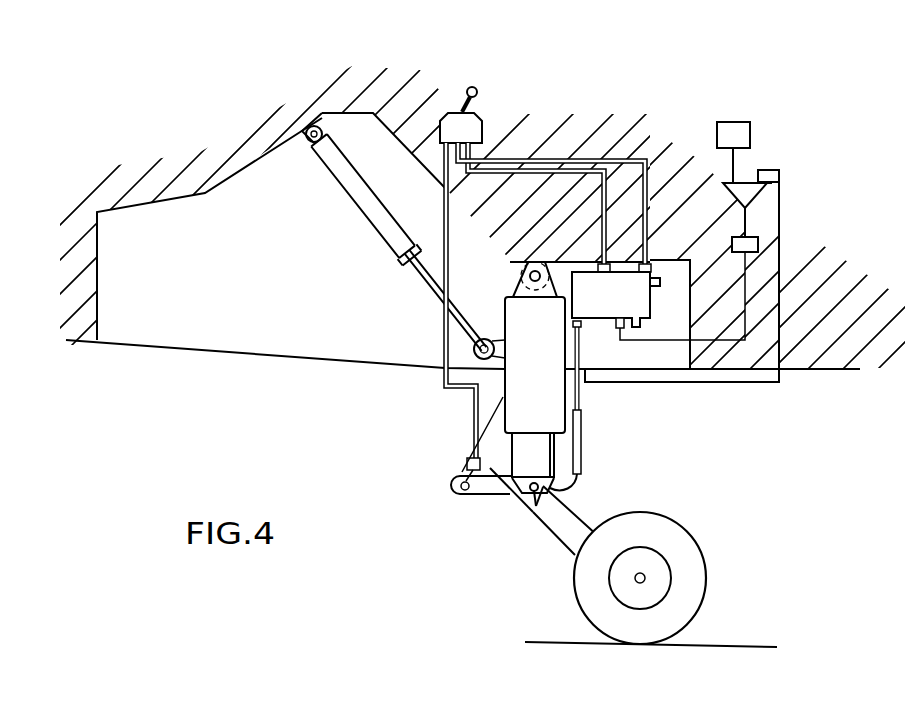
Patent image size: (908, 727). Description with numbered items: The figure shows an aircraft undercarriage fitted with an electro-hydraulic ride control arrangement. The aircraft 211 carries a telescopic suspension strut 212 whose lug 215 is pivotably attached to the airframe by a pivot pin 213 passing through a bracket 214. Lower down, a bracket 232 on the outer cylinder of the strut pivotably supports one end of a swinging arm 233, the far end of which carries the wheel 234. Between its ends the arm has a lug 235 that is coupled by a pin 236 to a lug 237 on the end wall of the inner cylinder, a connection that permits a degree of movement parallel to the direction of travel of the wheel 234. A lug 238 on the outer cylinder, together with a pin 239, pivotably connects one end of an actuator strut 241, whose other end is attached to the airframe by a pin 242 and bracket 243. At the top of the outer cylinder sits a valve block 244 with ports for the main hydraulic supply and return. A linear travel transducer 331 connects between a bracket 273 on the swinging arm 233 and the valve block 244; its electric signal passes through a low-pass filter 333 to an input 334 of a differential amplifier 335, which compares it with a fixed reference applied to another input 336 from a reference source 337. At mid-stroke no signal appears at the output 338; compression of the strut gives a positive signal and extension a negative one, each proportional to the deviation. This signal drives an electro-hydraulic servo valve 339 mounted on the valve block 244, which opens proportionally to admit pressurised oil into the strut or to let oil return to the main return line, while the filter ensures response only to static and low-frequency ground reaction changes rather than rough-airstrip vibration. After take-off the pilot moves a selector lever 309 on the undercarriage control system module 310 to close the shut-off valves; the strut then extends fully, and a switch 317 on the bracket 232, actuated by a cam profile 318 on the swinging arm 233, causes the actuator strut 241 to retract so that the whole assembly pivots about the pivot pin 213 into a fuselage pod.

The aircraft 211 is at (454, 363).
The telescopic suspension strut 212 is at (518, 392).
The pivot pin 213 is at (553, 262).
The bracket 214 is at (528, 262).
The lug 215 is at (517, 289).
The bracket 232 is at (482, 516).
The swinging arm 233 is at (556, 533).
The wheel 234 is at (645, 528).
The lug 235 is at (548, 504).
The pin 236 is at (517, 475).
The lug 237 is at (487, 511).
The lug 238 is at (443, 386).
The pin 239 is at (474, 349).
The actuator strut 241 is at (397, 250).
The pin 242 is at (310, 142).
The bracket 243 is at (306, 138).
The valve block 244 is at (616, 299).
The bracket 273 is at (552, 488).
The selector lever 309 is at (474, 86).
The undercarriage control system module 310 is at (449, 112).
The switch 317 is at (463, 471).
The cam profile 318 is at (460, 474).
The linear travel transducer 331 is at (582, 414).
The low-pass filter 333 is at (759, 251).
The input 334 is at (778, 180).
The differential amplifier 335 is at (742, 186).
The input 336 is at (737, 188).
The reference source 337 is at (738, 127).
The output 338 is at (752, 207).
The electro-hydraulic servo valve 339 is at (618, 331).